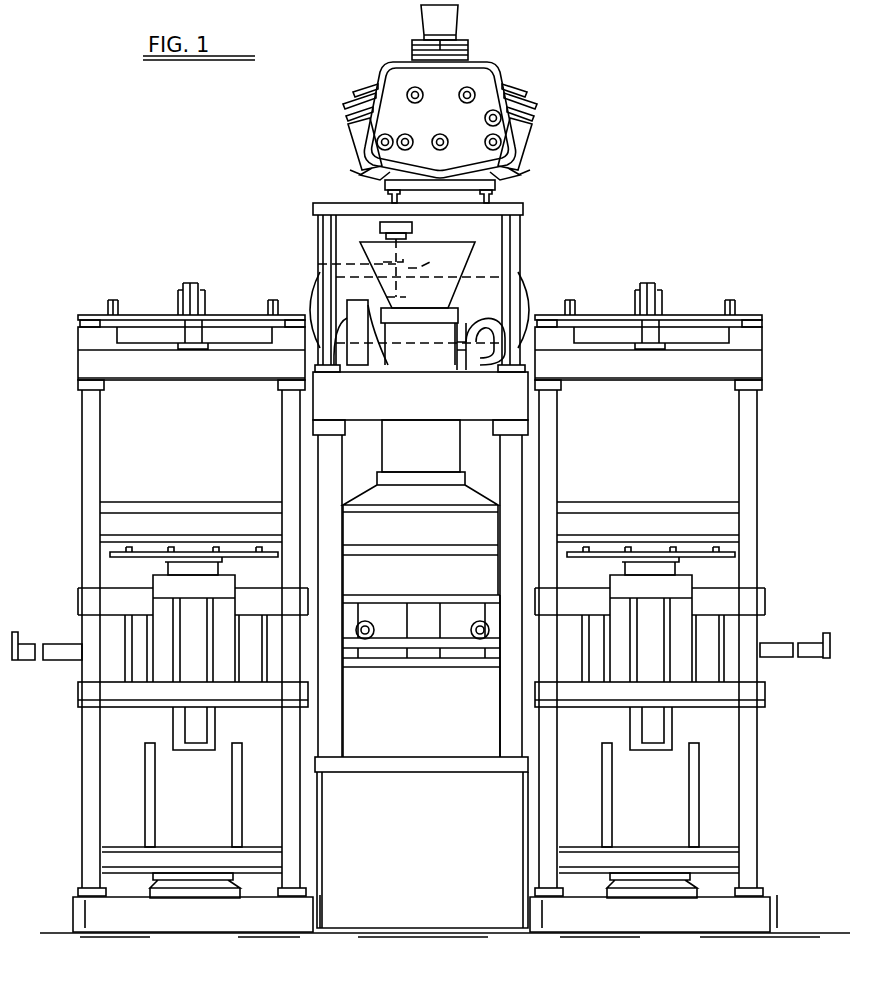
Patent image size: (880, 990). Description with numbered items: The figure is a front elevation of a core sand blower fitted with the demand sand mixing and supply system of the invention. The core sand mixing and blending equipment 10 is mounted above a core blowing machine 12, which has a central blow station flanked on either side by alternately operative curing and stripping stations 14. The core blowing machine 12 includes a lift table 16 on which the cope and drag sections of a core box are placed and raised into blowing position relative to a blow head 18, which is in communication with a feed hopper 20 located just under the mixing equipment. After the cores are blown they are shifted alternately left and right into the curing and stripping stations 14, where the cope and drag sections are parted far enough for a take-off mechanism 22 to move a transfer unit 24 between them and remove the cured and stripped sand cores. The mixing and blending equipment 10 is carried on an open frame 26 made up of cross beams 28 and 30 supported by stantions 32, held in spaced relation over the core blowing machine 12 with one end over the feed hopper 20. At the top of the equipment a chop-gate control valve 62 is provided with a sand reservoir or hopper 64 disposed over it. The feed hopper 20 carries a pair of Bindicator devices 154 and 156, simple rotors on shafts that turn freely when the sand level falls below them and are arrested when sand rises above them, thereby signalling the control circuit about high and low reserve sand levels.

The core sand mixing and blending equipment 10 is at (514, 80).
The core blowing machine 12 is at (452, 908).
The curing and stripping stations 14 is at (95, 432).
The lift table 16 is at (418, 595).
The blow head 18 is at (417, 533).
The feed hopper 20 is at (457, 262).
The take-off mechanism 22 is at (197, 722).
The transfer unit 24 is at (145, 552).
The open frame 26 is at (498, 185).
The cross beam 28 is at (393, 202).
The cross beam 30 is at (508, 203).
The stantions 32 is at (320, 243).
The chop-gate control valve 62 is at (470, 50).
The sand reservoir or hopper 64 is at (450, 23).
The Bindicator device 154 is at (318, 267).
The Bindicator device 156 is at (412, 270).